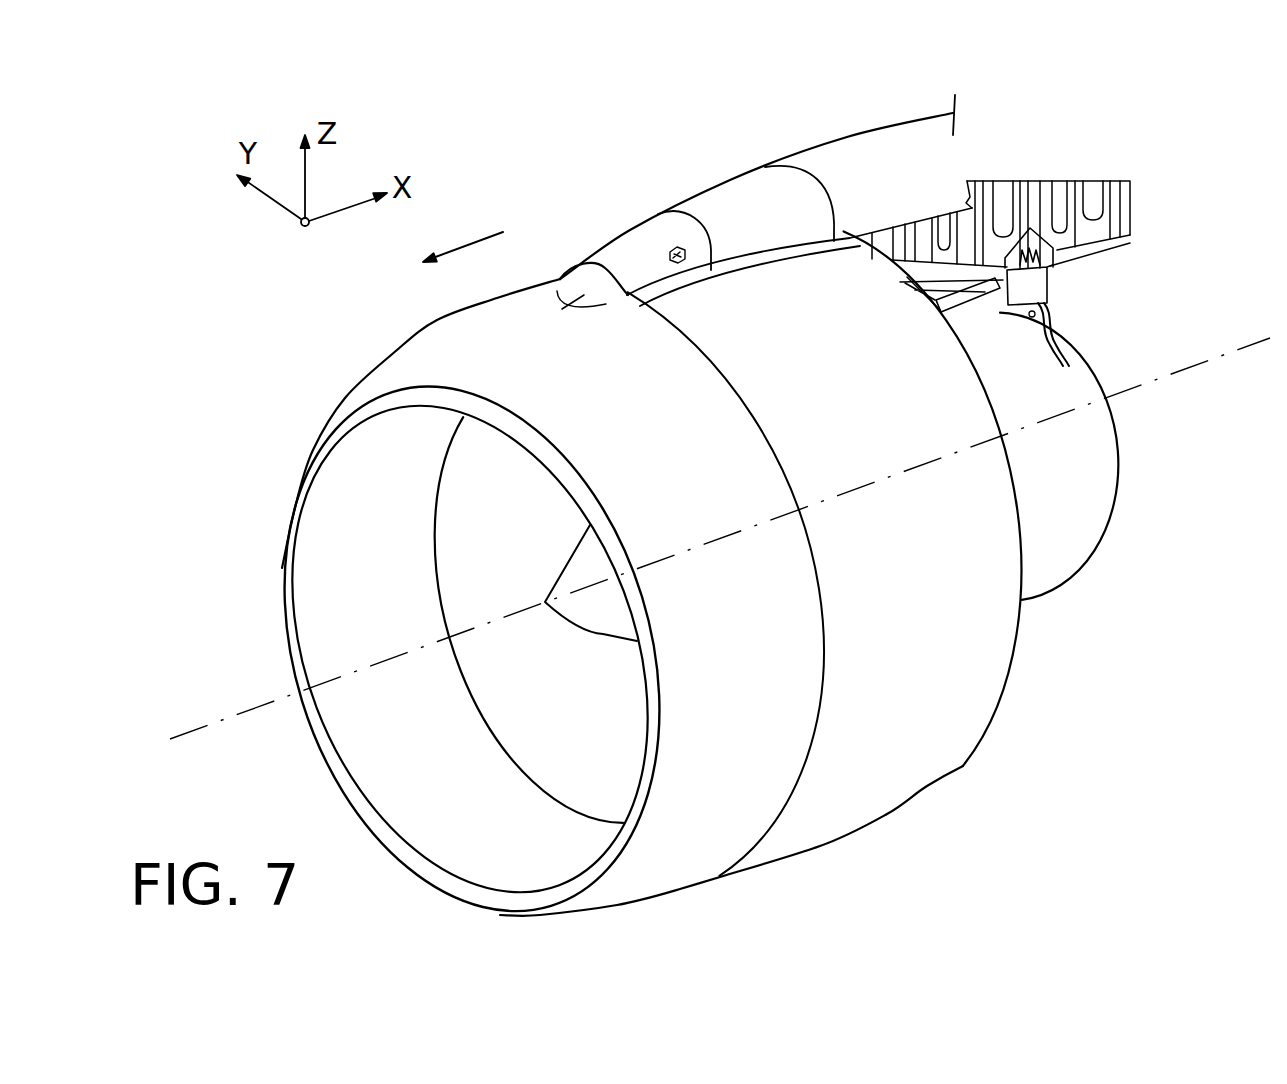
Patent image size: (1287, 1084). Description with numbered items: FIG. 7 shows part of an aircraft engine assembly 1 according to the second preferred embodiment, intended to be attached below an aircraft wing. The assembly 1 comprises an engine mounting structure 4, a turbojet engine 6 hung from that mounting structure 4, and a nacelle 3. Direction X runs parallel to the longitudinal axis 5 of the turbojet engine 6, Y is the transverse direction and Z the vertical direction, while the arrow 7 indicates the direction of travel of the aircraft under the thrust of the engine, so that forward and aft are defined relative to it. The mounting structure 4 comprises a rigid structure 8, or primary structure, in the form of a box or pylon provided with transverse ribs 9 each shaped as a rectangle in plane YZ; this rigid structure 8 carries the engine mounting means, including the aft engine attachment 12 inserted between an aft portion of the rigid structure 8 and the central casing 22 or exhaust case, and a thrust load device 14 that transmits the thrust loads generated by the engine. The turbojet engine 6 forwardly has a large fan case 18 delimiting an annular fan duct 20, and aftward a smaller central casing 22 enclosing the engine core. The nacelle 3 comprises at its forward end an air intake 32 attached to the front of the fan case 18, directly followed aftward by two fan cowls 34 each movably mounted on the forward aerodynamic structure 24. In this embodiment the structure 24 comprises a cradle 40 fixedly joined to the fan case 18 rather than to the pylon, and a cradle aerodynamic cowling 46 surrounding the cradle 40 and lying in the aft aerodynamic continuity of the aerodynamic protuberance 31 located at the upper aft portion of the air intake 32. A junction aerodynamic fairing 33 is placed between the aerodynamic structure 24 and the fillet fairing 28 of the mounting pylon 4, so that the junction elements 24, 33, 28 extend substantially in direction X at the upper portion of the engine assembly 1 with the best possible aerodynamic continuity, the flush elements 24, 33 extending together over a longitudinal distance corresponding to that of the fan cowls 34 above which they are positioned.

The aircraft engine assembly 1 is at (1165, 153).
The nacelle 3 is at (1113, 778).
The engine mounting structure 4 is at (1100, 264).
The longitudinal axis 5 is at (256, 708).
The turbojet engine 6 is at (1073, 578).
The arrow 7 is at (474, 242).
The rigid structure 8 is at (1128, 237).
The transverse ribs 9 is at (993, 180).
The aft engine attachment 12 is at (1050, 301).
The thrust load device 14 is at (978, 332).
The fan case 18 is at (437, 505).
The annular fan duct 20 is at (467, 582).
The central casing 22 is at (1088, 468).
The forward aerodynamic structure 24 is at (633, 241).
The fillet fairing 28 is at (848, 137).
The aerodynamic protuberance 31 is at (566, 279).
The air intake 32 is at (682, 865).
The junction aerodynamic fairing 33 is at (722, 186).
The fan cowls 34 is at (850, 805).
The cradle 40 is at (670, 262).
The cradle aerodynamic cowling 46 is at (588, 260).